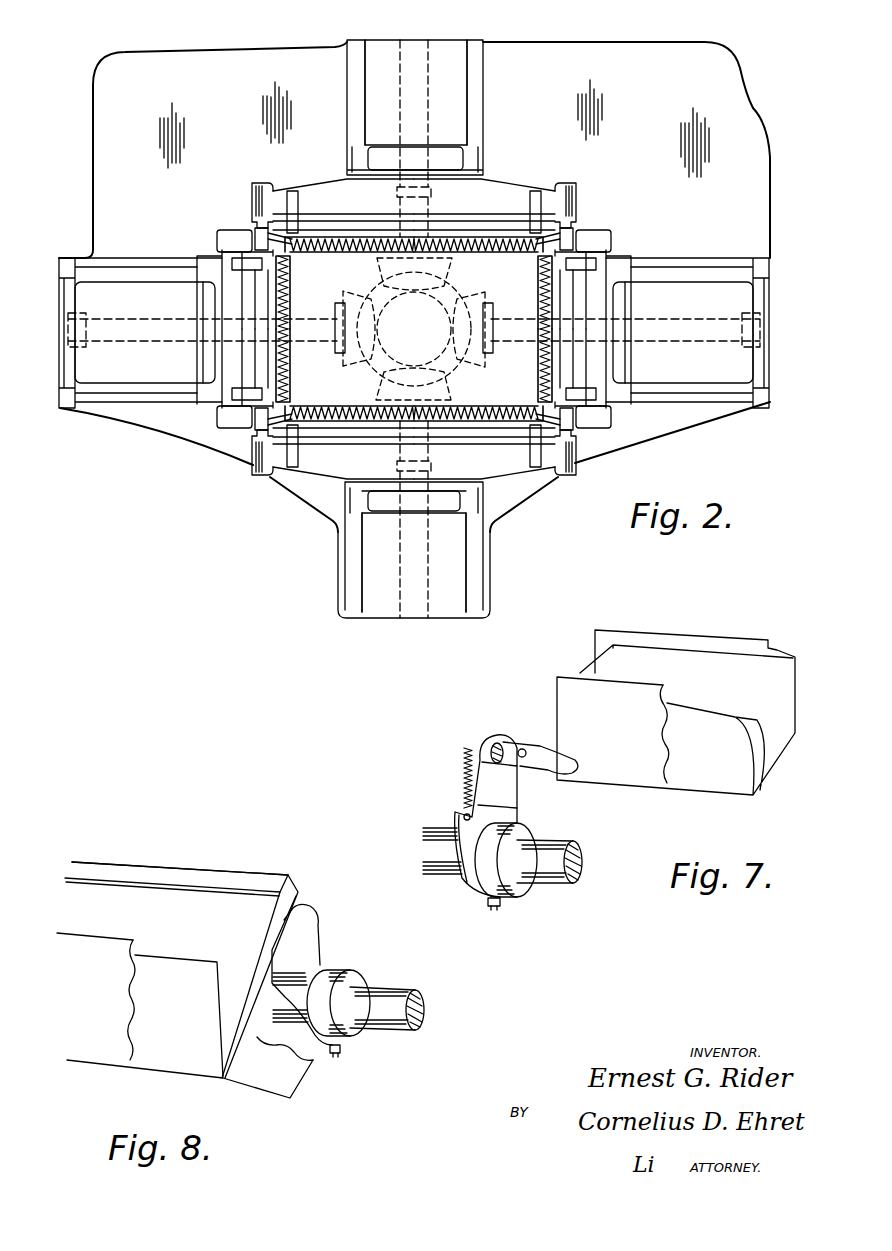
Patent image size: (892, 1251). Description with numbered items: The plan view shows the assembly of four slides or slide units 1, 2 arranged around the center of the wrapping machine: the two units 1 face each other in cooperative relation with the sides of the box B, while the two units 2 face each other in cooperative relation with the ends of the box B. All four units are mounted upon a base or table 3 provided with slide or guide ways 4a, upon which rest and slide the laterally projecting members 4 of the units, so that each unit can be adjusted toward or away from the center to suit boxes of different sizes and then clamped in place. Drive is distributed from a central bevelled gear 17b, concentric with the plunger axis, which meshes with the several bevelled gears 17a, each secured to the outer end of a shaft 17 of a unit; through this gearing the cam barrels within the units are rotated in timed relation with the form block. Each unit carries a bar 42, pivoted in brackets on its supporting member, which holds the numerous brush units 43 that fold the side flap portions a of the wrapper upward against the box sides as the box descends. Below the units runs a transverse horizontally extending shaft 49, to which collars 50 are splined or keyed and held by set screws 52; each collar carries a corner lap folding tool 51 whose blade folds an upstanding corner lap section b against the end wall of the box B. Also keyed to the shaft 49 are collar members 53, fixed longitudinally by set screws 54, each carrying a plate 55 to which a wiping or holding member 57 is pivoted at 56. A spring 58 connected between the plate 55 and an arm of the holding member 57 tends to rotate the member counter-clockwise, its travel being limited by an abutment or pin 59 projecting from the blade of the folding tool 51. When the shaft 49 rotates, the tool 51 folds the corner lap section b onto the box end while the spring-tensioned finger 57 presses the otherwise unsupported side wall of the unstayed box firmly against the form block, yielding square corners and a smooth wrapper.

In FIG. 2, the slide unit 1 is at (450, 108).
In FIG. 2, the slide unit 2 is at (90, 303).
In FIG. 2, the base or table 3 is at (753, 198).
In FIG. 2, the laterally projecting member 4 is at (352, 52).
In FIG. 2, the slide or guide way 4a is at (354, 160).
In FIG. 2, the shaft 17 is at (412, 48).
In FIG. 2, the bevelled gear 17a is at (432, 277).
In FIG. 2, the bevelled gear 17b is at (457, 292).
In FIG. 2, the bar 42 is at (490, 233).
In FIG. 2, the brush unit 43 is at (345, 248).
In FIG. 7, the shaft 49 is at (585, 874).
In FIG. 8, the shaft 49 is at (423, 1018).
In FIG. 8, the collar 50 is at (363, 1037).
In FIG. 7, the corner lap folding tool 51 is at (520, 778).
In FIG. 8, the corner lap folding tool 51 is at (300, 938).
In FIG. 8, the set screw 52 is at (340, 1057).
In FIG. 7, the collar member 53 is at (520, 888).
In FIG. 7, the set screw 54 is at (495, 907).
In FIG. 7, the plate 55 is at (503, 805).
In FIG. 7, the pivot 56 is at (495, 742).
In FIG. 7, the wiping or holding member 57 is at (567, 757).
In FIG. 7, the spring 58 is at (467, 778).
In FIG. 7, the abutment or pin 59 is at (522, 750).
In FIG. 8, the side flap portion or panel a is at (208, 873).
In FIG. 8, the corner lap section b is at (297, 892).
In FIG. 8, the box B is at (182, 970).